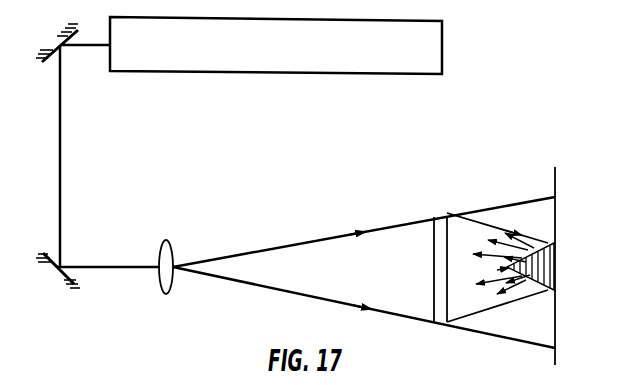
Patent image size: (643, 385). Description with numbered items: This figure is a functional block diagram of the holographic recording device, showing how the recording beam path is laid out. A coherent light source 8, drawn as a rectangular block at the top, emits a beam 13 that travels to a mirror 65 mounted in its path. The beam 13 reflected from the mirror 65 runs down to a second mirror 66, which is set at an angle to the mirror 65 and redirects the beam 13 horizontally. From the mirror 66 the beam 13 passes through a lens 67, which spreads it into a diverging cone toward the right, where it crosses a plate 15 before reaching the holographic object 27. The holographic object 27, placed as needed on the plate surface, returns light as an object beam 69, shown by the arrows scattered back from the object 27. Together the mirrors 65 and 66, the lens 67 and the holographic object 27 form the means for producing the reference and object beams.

The coherent light source 8 is at (432, 57).
The beam 13 is at (85, 46).
The transparent plate / window 15 is at (444, 216).
The holographic object 27 is at (546, 272).
The mirror 65 is at (53, 40).
The mirror 66 is at (53, 276).
The lens 67 is at (172, 256).
The object beam 69 is at (494, 308).